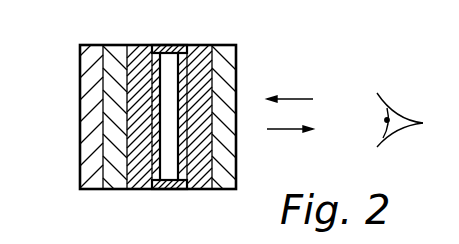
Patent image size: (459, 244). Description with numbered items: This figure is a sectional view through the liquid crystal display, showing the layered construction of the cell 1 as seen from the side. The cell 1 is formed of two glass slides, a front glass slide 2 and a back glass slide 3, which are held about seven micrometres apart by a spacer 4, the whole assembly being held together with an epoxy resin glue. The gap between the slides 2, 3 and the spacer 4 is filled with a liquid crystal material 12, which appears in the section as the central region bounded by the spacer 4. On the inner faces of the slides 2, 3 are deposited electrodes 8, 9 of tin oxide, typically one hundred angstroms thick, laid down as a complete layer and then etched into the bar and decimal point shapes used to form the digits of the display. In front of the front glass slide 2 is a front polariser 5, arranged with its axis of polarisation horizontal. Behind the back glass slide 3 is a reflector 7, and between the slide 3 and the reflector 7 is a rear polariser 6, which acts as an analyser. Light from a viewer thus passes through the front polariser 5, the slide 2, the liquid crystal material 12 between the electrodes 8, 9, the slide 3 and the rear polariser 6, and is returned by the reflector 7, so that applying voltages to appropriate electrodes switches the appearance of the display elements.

The cell 1 is at (80, 170).
The front glass slide 2 is at (203, 45).
The back glass slide 3 is at (137, 52).
The spacer 4 is at (183, 191).
The front polariser 5 is at (225, 75).
The rear polariser 6 is at (113, 87).
The reflector 7 is at (88, 115).
The electrode 8 is at (182, 50).
The electrode 9 is at (153, 47).
The liquid crystal material 12 is at (171, 168).